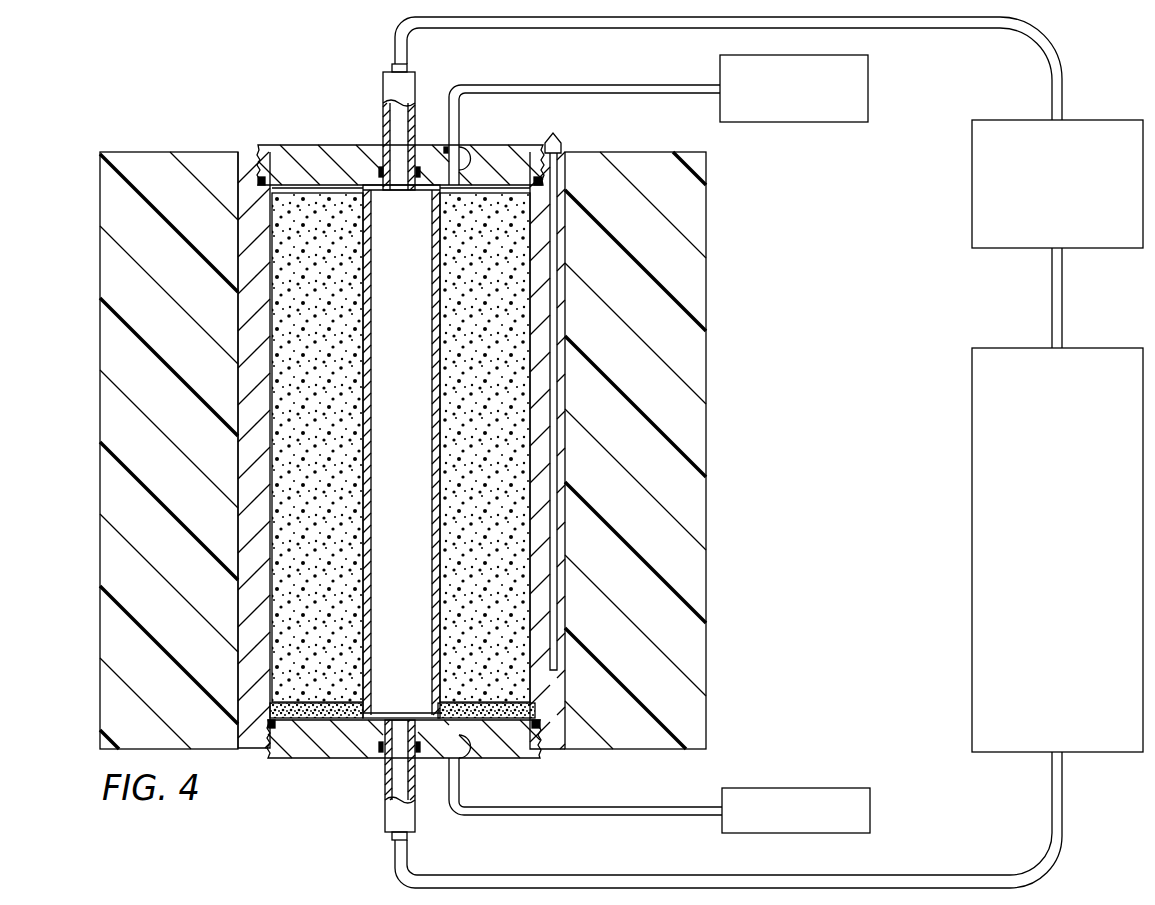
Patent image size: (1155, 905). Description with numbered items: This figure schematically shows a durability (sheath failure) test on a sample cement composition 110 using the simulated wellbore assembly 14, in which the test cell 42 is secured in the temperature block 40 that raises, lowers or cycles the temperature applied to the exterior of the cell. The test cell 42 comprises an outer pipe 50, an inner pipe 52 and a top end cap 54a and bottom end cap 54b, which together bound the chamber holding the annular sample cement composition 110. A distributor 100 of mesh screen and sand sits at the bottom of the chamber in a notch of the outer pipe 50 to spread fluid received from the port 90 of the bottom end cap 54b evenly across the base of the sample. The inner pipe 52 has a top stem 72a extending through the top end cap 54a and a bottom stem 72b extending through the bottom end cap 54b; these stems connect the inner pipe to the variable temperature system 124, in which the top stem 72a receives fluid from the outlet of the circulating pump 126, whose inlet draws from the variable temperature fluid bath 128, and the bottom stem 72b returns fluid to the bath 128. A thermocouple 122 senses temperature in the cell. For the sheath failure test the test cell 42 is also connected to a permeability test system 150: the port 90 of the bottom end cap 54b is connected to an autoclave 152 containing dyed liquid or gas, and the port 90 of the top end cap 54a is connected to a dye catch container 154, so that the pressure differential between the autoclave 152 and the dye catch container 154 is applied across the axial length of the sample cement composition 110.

The simulated wellbore assembly 14 is at (133, 85).
The test cell 42 is at (297, 69).
The temperature block 40 is at (100, 485).
The outer pipe 50 is at (240, 141).
The inner pipe 52 is at (450, 373).
The top end cap 54a is at (288, 133).
The bottom end cap 54b is at (292, 770).
The top stem 72a is at (383, 90).
The bottom stem 72b is at (385, 812).
The port 90 is at (460, 147).
The distributor 100 is at (508, 686).
The sample cement composition 110 is at (300, 466).
The thermocouple 122 is at (561, 137).
The variable temperature system 124 is at (1116, 792).
The circulating pump 126 is at (1075, 213).
The variable temperature fluid bath 128 is at (1076, 607).
The permeability test system 150 is at (884, 52).
The autoclave 152 is at (817, 788).
The dye catch container 154 is at (805, 122).